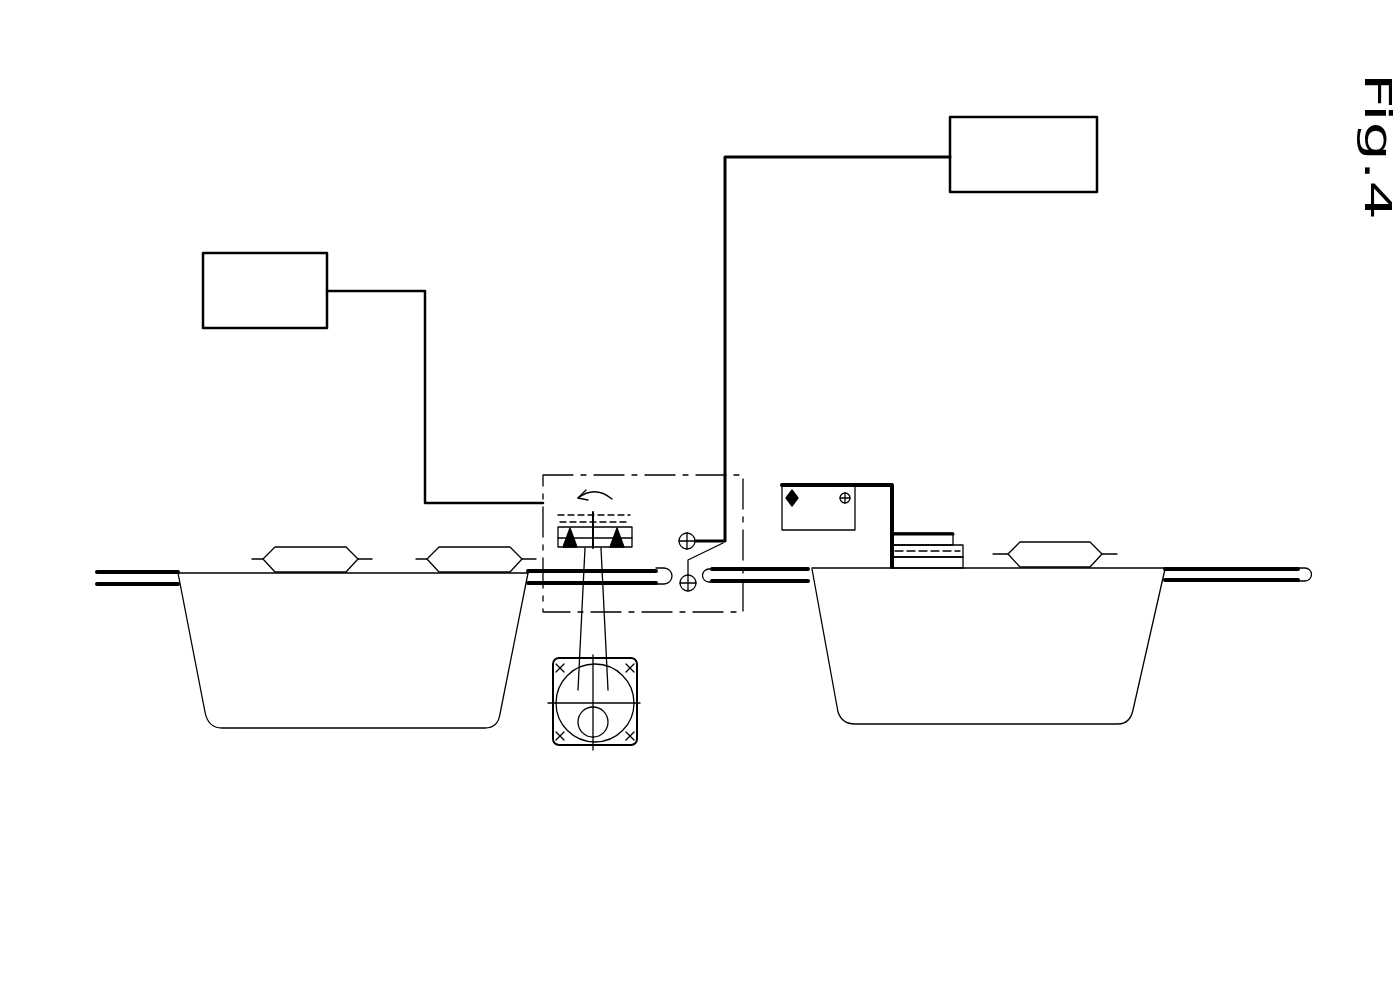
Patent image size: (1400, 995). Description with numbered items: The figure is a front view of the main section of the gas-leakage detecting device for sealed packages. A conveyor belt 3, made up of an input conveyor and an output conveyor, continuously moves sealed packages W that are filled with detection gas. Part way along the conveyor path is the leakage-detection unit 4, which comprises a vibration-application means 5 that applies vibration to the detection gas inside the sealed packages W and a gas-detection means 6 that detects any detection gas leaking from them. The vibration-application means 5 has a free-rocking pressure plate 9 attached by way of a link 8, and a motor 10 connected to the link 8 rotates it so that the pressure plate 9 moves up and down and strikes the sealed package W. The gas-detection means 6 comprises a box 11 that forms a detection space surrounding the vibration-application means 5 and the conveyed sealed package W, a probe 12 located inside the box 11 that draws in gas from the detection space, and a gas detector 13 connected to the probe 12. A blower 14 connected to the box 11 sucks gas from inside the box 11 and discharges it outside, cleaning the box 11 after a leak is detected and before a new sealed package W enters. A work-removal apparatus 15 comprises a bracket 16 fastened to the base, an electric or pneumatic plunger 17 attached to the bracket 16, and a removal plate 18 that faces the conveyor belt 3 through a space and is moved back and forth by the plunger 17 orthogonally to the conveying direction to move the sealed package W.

The conveyor belt 3 is at (127, 572).
The sealed package W is at (440, 547).
The leakage-detection unit 4 is at (671, 500).
The vibration-application means 5 is at (550, 592).
The gas-detection means 6 is at (966, 389).
The link 8 is at (636, 540).
The pressure plate 9 is at (572, 565).
The motor 10 is at (608, 746).
The box 11 is at (740, 478).
The probe 12 is at (695, 536).
The gas detector 13 is at (1073, 170).
The blower 14 is at (285, 253).
The work-removal apparatus 15 is at (956, 446).
The bracket 16 is at (832, 517).
The plunger 17 is at (798, 484).
The removal plate 18 is at (923, 558).